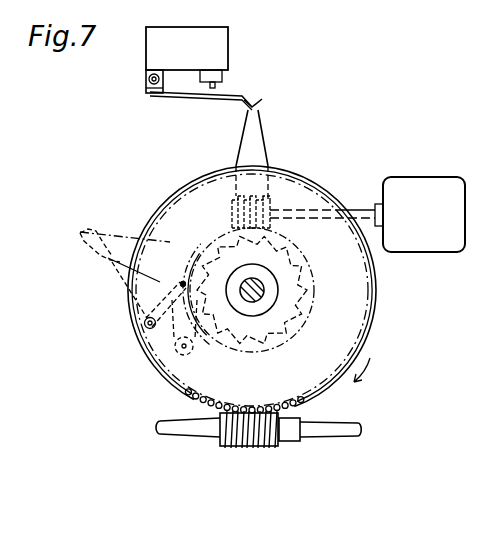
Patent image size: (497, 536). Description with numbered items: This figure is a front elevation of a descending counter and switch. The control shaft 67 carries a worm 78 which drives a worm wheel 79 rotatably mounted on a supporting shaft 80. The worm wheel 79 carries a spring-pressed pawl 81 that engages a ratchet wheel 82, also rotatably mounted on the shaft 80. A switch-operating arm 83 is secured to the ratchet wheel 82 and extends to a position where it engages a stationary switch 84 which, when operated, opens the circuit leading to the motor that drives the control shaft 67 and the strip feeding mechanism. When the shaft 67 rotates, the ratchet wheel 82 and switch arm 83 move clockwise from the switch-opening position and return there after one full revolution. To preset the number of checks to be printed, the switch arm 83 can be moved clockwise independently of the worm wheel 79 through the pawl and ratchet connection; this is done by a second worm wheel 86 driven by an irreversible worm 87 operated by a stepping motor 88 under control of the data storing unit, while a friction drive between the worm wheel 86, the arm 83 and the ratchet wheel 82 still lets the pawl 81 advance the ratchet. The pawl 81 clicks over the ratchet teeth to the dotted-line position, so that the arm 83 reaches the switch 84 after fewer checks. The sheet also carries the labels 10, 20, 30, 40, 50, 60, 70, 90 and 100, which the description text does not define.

The drive assembly 10 is at (151, 152).
The lever assembly 20 is at (75, 232).
The rotary wheel 30 is at (85, 341).
The worm drive assembly 40 is at (147, 444).
The drive shaft assembly 50 is at (250, 468).
The shaft 60 is at (360, 440).
The control shaft 67 is at (320, 431).
The direction of rotation 70 is at (413, 344).
The worm 78 is at (225, 448).
The worm wheel 79 is at (186, 396).
The supporting shaft 80 is at (264, 290).
The spring-pressed pawl 81 is at (150, 333).
The ratchet wheel 82 is at (232, 346).
The switch-operating arm 83 is at (255, 144).
The stationary switch 84 is at (207, 41).
The worm wheel 86 is at (222, 232).
The irreversible worm 87 is at (235, 196).
The stepping motor 88 is at (425, 187).
The motor assembly 90 is at (354, 148).
The position indicator 100 is at (243, 75).